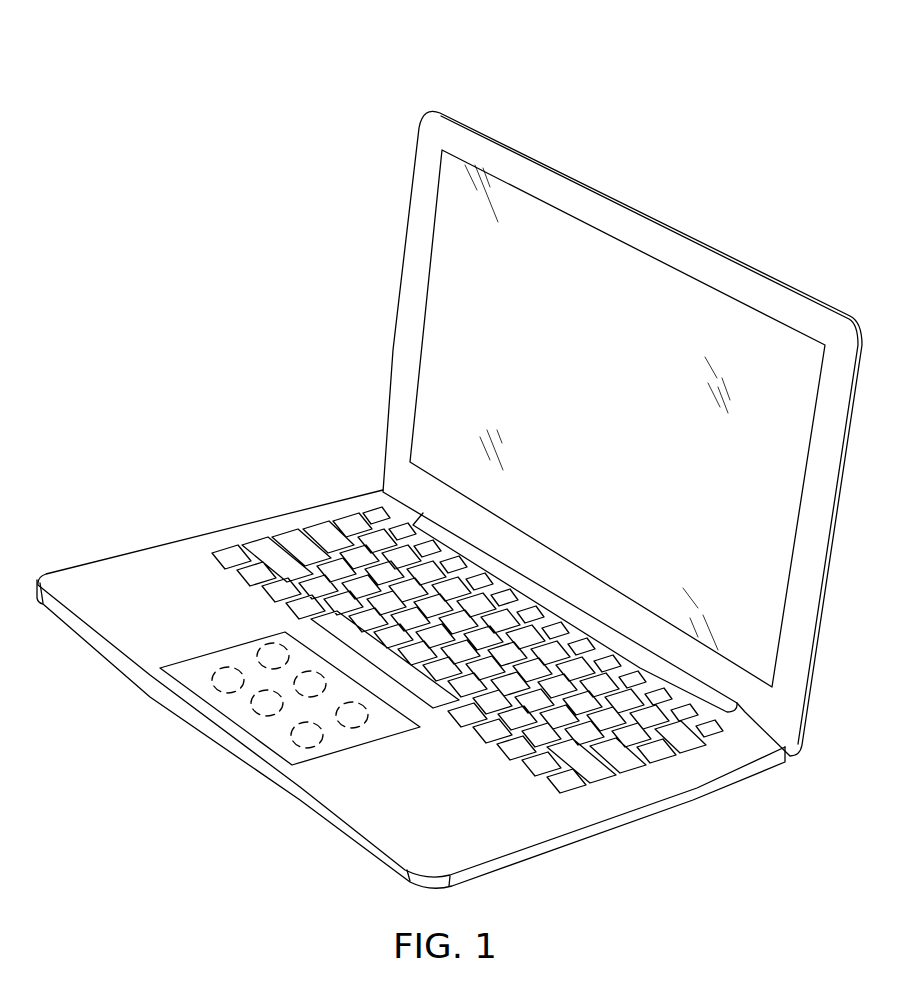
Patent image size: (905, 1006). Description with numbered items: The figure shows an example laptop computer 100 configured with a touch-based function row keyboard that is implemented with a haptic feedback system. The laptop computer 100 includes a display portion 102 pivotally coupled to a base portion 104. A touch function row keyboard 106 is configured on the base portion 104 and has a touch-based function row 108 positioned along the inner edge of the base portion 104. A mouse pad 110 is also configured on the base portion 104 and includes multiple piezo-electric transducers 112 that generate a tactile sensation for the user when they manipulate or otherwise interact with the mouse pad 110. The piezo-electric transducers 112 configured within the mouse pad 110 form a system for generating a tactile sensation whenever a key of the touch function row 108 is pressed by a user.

The laptop computer 100 is at (140, 78).
The display portion 102 is at (642, 213).
The base portion 104 is at (183, 536).
The touch function row keyboard 106 is at (283, 528).
The touch-based function row 108 is at (721, 738).
The mouse pad 110 is at (222, 647).
The piezo-electric transducers 112 is at (323, 738).